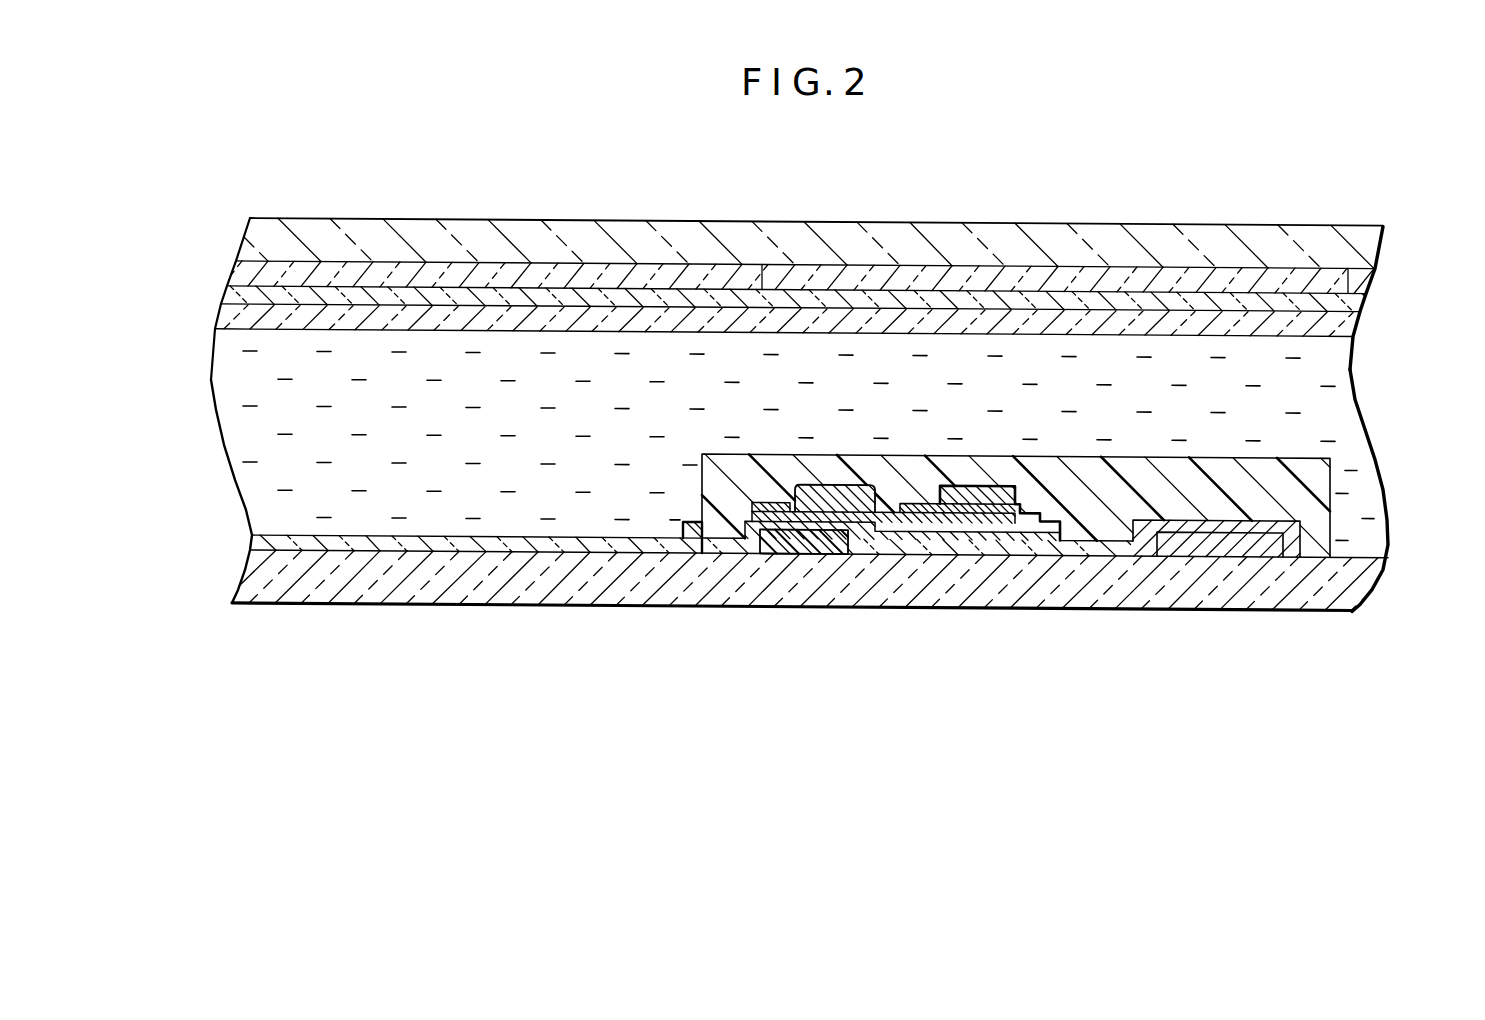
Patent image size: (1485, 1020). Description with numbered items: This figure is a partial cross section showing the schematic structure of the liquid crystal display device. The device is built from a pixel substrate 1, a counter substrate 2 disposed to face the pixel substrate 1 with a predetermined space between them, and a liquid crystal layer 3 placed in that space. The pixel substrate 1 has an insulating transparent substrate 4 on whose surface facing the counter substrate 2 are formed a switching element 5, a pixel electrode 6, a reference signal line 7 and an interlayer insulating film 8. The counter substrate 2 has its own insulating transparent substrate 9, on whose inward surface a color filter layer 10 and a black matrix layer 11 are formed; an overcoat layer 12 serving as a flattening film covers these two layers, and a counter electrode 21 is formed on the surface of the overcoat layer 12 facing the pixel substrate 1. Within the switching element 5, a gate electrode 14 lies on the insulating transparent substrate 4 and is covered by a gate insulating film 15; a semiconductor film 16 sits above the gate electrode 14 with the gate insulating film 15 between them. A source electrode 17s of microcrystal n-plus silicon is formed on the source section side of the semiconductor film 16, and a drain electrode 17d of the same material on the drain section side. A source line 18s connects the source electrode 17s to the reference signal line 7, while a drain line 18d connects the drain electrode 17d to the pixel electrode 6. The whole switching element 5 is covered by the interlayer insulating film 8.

The pixel substrate 1 is at (1386, 592).
The counter substrate 2 is at (1402, 224).
The liquid crystal layer 3 is at (1330, 368).
The insulating transparent substrate 4 is at (1370, 574).
The switching element 5 is at (836, 563).
The pixel electrode 6 is at (503, 543).
The reference signal line 7 is at (1272, 553).
The interlayer insulating film 8 is at (1320, 472).
The insulating transparent substrate 9 is at (255, 240).
The color filter layer 10 is at (242, 277).
The black matrix layer 11 is at (1270, 266).
The overcoat layer 12 is at (1347, 294).
The gate electrode 14 is at (925, 549).
The gate insulating film 15 is at (962, 518).
The semiconductor film 16 is at (870, 509).
The drain electrode 17d is at (750, 507).
The source electrode 17s is at (1022, 515).
The drain line 18d is at (735, 553).
The source line 18s is at (1050, 515).
The counter electrode 21 is at (217, 315).